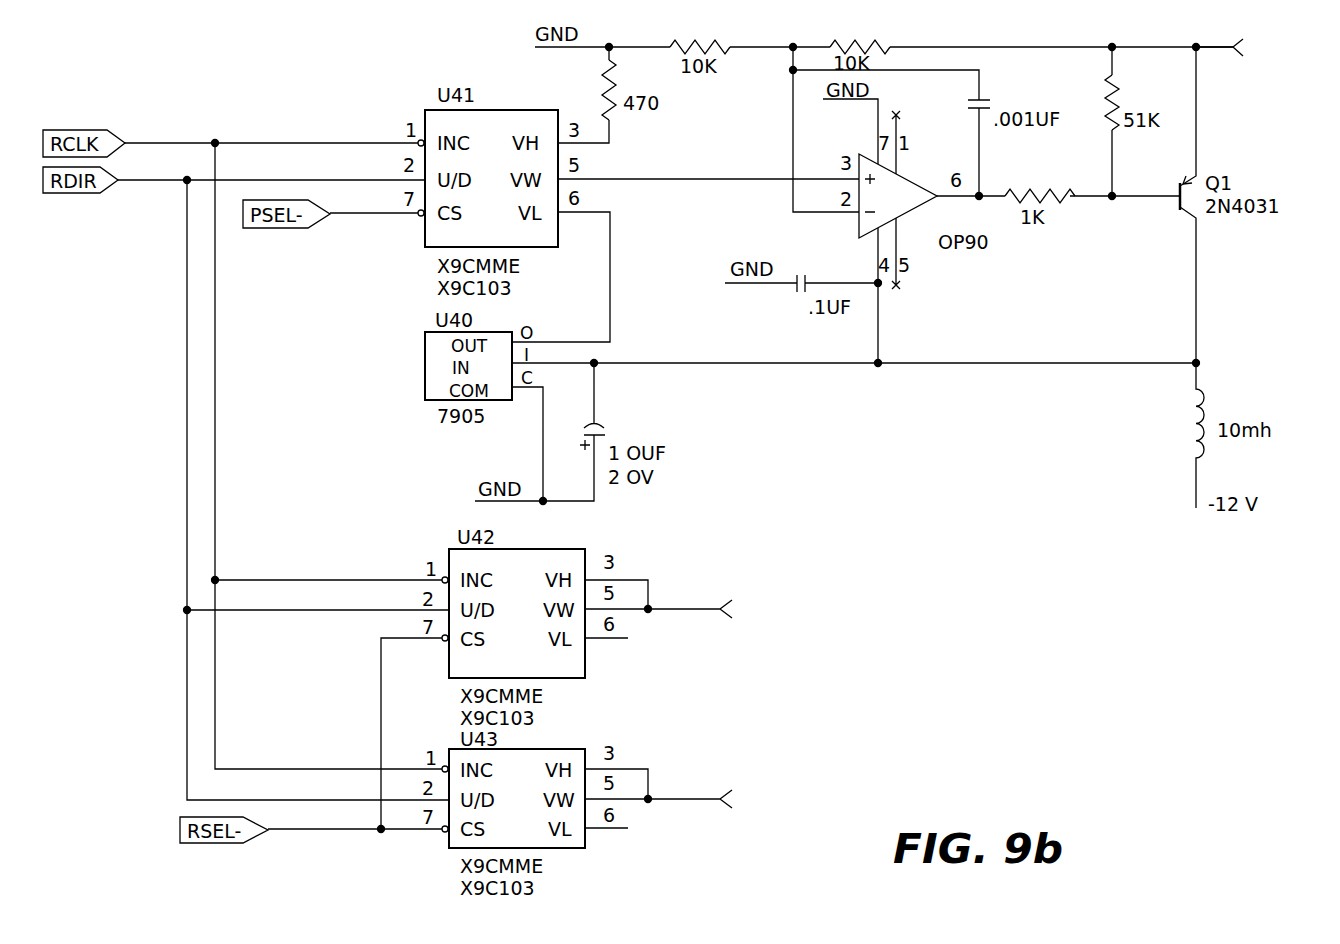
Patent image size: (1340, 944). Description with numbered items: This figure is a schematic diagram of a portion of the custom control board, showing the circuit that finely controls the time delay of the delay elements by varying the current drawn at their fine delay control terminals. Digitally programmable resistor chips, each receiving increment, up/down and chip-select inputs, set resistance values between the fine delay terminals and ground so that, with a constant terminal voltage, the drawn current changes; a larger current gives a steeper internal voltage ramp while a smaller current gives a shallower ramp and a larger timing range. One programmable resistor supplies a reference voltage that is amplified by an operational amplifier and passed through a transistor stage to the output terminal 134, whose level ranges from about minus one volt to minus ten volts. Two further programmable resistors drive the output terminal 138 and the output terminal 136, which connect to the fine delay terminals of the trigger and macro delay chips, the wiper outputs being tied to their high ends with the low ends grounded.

The output terminal (-1V to -10V) 134 is at (1214, 46).
The output terminal of U43 136 is at (707, 799).
The output terminal of U42 138 is at (701, 609).